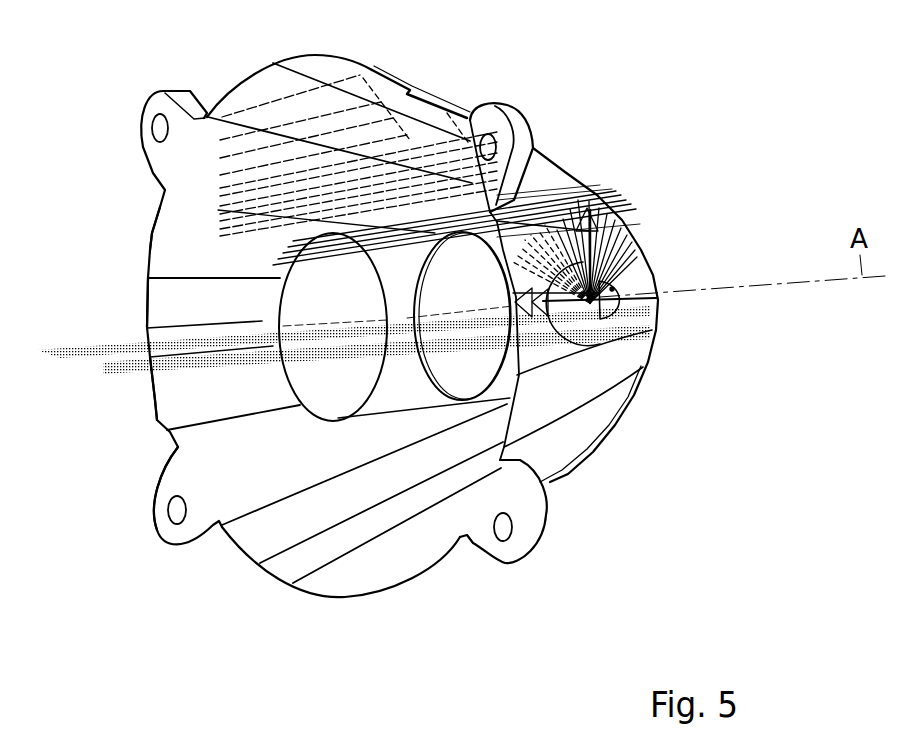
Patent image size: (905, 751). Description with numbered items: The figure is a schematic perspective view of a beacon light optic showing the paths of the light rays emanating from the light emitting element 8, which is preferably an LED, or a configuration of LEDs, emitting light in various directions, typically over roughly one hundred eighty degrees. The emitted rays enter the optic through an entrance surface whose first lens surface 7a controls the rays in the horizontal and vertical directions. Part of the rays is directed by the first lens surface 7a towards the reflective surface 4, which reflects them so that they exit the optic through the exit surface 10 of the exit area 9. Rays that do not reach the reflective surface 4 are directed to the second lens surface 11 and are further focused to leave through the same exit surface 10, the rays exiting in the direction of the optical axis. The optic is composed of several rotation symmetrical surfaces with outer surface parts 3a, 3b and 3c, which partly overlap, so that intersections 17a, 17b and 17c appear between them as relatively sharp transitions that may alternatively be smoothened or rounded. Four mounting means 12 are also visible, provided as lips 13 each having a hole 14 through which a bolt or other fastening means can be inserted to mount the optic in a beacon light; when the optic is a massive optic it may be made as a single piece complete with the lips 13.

The reflective surface 4 is at (400, 82).
The mounting means 12 is at (148, 113).
The lip 13 is at (152, 511).
The hole 14 is at (177, 512).
The outer surface part 3a is at (150, 236).
The intersection 17a is at (147, 275).
The outer surface part 3b is at (147, 300).
The intersection 17b is at (147, 328).
The intersection 17c is at (148, 360).
The outer surface part 3c is at (155, 408).
The exit surface 10 is at (310, 562).
The exit area 9 is at (368, 571).
The second lens surface 11 is at (484, 370).
The first lens surface 7a is at (592, 337).
The light emitting element 8 is at (615, 289).